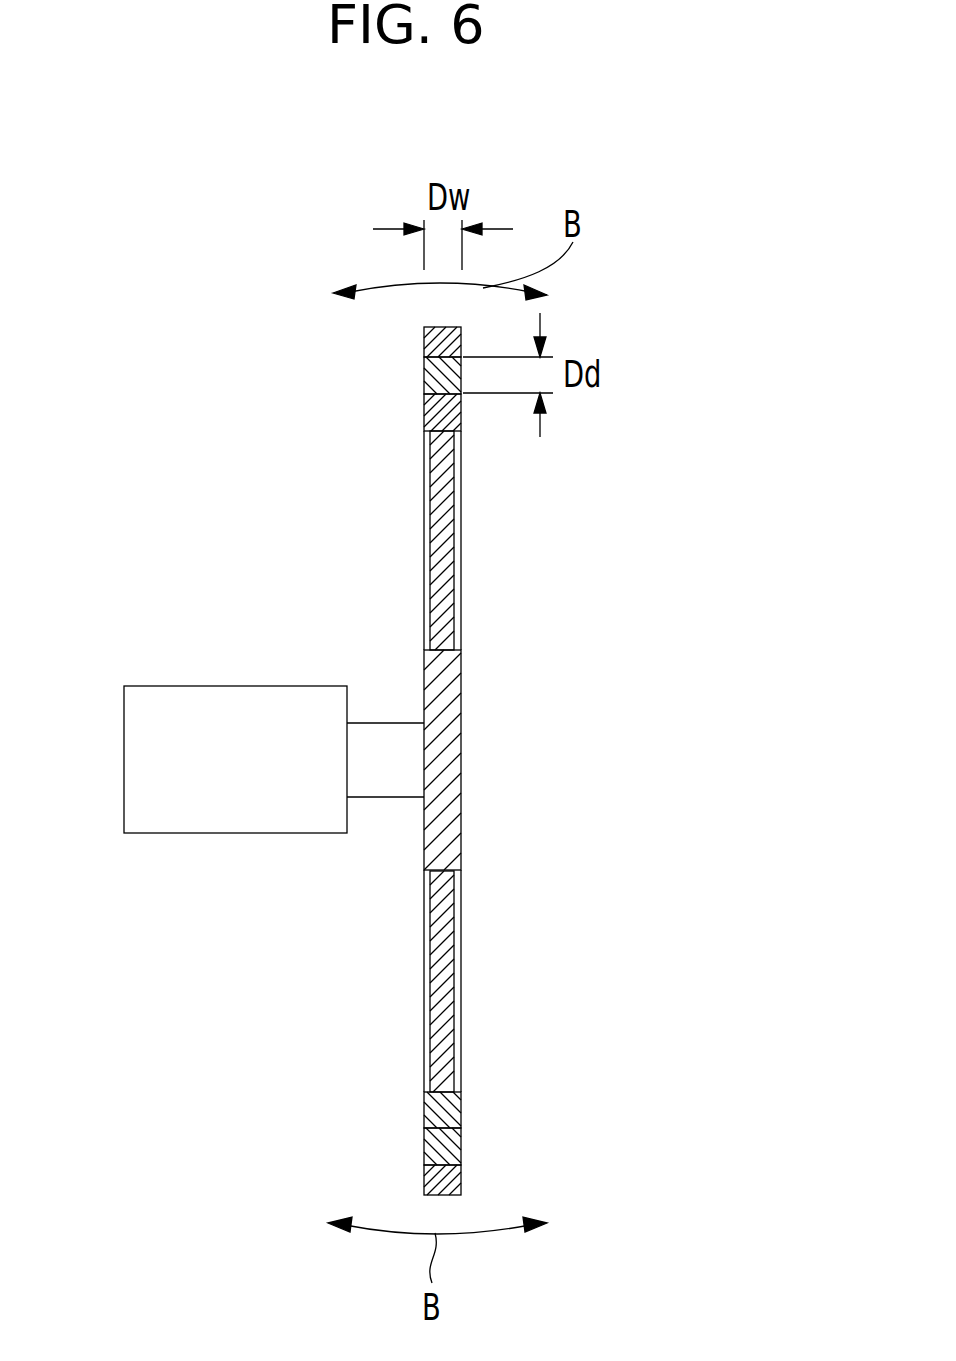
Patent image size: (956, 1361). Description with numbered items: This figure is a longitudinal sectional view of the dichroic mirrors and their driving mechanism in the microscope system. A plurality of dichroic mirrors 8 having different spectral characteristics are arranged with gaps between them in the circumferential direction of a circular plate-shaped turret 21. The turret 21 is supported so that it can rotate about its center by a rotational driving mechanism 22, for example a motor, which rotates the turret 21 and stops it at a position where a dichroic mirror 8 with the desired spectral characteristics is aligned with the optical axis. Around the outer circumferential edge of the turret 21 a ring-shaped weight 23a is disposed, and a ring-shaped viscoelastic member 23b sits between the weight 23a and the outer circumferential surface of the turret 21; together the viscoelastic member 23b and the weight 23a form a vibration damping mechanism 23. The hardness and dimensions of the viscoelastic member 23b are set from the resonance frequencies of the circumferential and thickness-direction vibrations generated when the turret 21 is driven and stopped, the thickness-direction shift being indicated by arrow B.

The dichroic mirror 8 is at (454, 502).
The turret 21 is at (461, 755).
The rotational driving mechanism 22 is at (230, 686).
The vibration damping mechanism 23 is at (285, 310).
The weight 23a is at (422, 343).
The viscoelastic member 23b is at (422, 382).